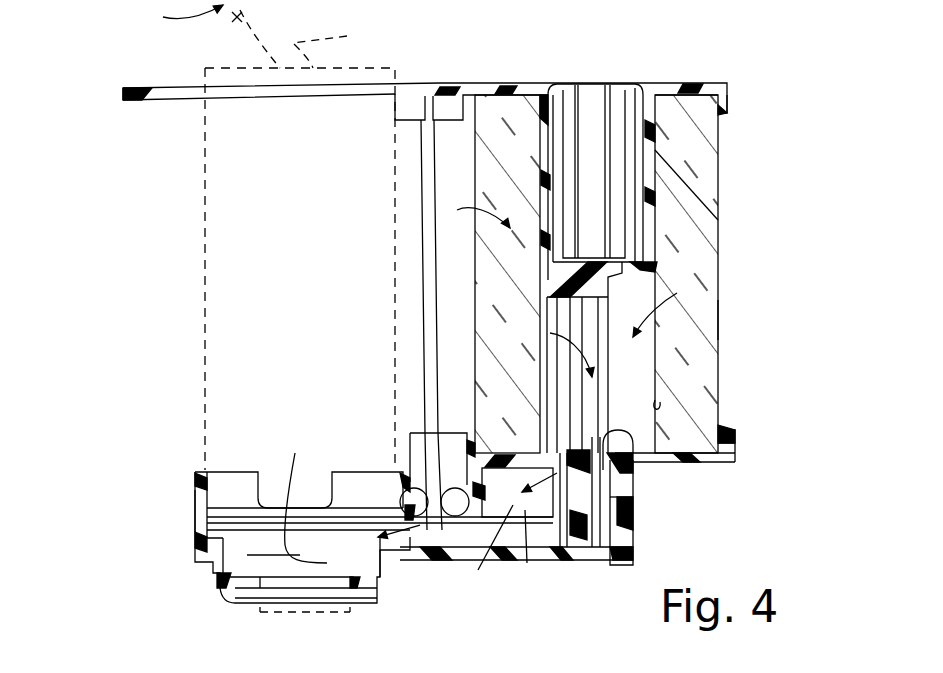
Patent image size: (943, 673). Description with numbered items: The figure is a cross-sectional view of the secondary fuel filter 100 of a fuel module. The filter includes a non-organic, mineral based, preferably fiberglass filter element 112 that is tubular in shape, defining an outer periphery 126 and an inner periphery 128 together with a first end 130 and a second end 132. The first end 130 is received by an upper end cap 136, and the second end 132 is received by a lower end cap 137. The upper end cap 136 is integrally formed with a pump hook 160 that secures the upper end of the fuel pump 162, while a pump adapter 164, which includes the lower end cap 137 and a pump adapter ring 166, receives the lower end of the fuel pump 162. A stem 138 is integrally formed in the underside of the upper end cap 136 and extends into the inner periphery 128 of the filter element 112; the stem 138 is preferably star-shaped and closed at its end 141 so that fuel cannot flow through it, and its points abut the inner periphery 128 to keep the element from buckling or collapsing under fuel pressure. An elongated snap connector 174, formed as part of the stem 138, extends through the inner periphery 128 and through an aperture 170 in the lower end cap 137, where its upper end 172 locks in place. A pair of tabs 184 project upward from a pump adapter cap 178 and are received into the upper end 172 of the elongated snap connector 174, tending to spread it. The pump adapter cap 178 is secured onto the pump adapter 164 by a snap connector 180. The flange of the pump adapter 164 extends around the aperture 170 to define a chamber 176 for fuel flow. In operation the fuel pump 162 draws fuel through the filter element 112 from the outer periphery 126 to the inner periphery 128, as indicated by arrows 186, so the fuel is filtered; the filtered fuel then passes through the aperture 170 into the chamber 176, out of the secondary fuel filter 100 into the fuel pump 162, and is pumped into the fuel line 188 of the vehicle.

The secondary filtration filter 100 is at (768, 60).
The filter element 112 is at (720, 220).
The outer periphery 126 is at (720, 330).
The inner periphery 128 is at (657, 405).
The first end 130 is at (678, 82).
The second end 132 is at (418, 550).
The upper end cap 136 is at (728, 97).
The lower end cap 137 is at (735, 433).
The stem 138 is at (593, 117).
The end 141 is at (640, 276).
The pump hook 160 is at (149, 88).
The fuel pump 162 is at (237, 235).
The pump adapter 164 is at (160, 525).
The pump adapter ring 166 is at (187, 492).
The aperture 170 is at (603, 433).
The upper end 172 is at (603, 473).
The elongated snap connector 174 is at (592, 417).
The chamber 176 is at (247, 555).
The pump adapter cap 178 is at (603, 565).
The snap connector 180 is at (417, 467).
The tab 184 is at (557, 500).
The arrows 186 is at (188, 11).
The fuel line 188 is at (319, 39).